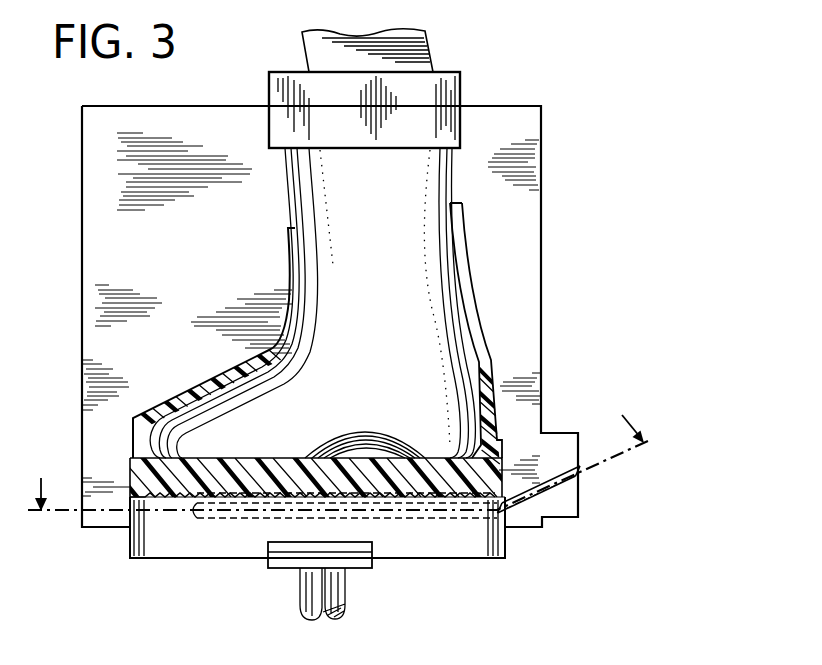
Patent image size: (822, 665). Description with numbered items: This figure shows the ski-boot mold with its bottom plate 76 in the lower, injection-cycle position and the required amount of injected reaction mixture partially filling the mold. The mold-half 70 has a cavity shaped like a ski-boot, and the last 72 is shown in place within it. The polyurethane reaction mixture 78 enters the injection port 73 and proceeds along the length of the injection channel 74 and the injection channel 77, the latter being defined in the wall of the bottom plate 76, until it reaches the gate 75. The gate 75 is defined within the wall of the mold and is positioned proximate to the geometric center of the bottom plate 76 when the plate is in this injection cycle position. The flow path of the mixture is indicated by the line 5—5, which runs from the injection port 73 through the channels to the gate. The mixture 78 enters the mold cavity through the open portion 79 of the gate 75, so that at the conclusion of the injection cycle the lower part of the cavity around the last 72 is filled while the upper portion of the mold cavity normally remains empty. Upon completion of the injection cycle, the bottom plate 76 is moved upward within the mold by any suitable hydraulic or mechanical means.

The mold-half 70 is at (535, 223).
The last 72 is at (388, 304).
The injection port 73 is at (578, 474).
The injection channel 74 is at (537, 494).
The gate 75 is at (260, 515).
The bottom plate 76 is at (497, 548).
The injection channel 77 is at (433, 432).
The polyurethane reaction mixture 78 is at (488, 358).
The open portion 79 is at (223, 451).
The line 5— 5 is at (339, 448).